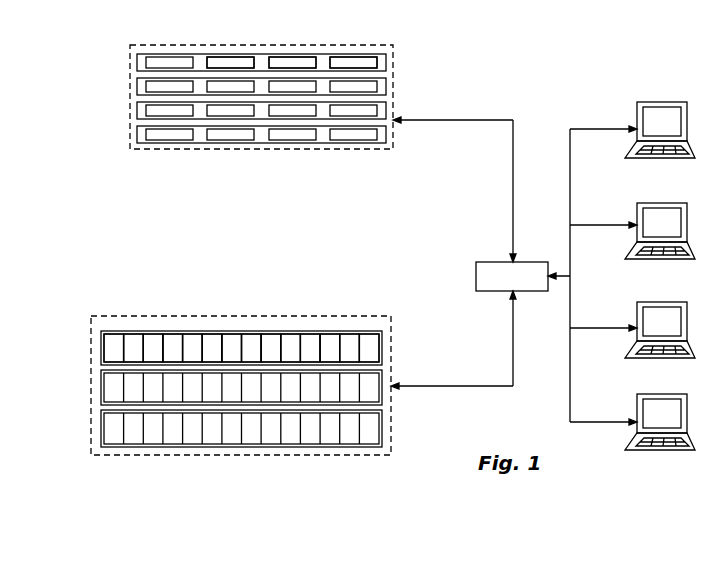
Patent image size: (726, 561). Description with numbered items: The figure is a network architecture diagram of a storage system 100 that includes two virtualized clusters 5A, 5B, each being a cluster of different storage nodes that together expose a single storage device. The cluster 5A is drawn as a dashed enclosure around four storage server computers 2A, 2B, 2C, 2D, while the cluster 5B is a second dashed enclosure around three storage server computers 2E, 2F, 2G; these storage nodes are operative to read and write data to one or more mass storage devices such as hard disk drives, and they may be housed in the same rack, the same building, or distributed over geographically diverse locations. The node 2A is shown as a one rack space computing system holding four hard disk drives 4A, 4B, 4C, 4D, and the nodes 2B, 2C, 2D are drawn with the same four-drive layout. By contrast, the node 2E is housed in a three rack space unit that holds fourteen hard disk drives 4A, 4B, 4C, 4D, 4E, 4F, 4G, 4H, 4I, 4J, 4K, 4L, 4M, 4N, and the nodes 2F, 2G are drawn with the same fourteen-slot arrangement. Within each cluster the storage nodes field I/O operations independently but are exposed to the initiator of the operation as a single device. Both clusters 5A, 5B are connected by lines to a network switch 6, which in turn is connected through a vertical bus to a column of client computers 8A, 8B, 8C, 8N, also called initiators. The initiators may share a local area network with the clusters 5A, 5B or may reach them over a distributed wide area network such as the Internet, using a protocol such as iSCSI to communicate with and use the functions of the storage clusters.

The storage system 100 is at (553, 93).
The virtualized cluster 5A is at (393, 62).
The virtualized cluster 5B is at (391, 330).
The storage server computer 2A is at (386, 68).
The storage server computer 2B is at (386, 93).
The storage server computer 2C is at (386, 118).
The storage server computer 2D is at (386, 141).
The storage server computer 2E is at (382, 360).
The storage server computer 2F is at (382, 400).
The storage server computer 2G is at (382, 440).
The hard disk drive 4A is at (148, 209).
The hard disk drive 4B is at (189, 209).
The hard disk drive 4C is at (229, 209).
The hard disk drive 4D is at (270, 209).
The hard disk drive 4E is at (193, 348).
The hard disk drive 4F is at (212, 348).
The hard disk drive 4G is at (232, 348).
The hard disk drive 4H is at (252, 348).
The hard disk drive 4I is at (271, 348).
The hard disk drive 4J is at (291, 348).
The hard disk drive 4K is at (310, 348).
The hard disk drive 4L is at (330, 348).
The hard disk drive 4M is at (350, 348).
The hard disk drive 4N is at (369, 348).
The network switch 6 is at (527, 291).
The client computer 8A is at (682, 158).
The client computer 8B is at (682, 259).
The client computer 8C is at (682, 358).
The client computer 8N is at (682, 450).